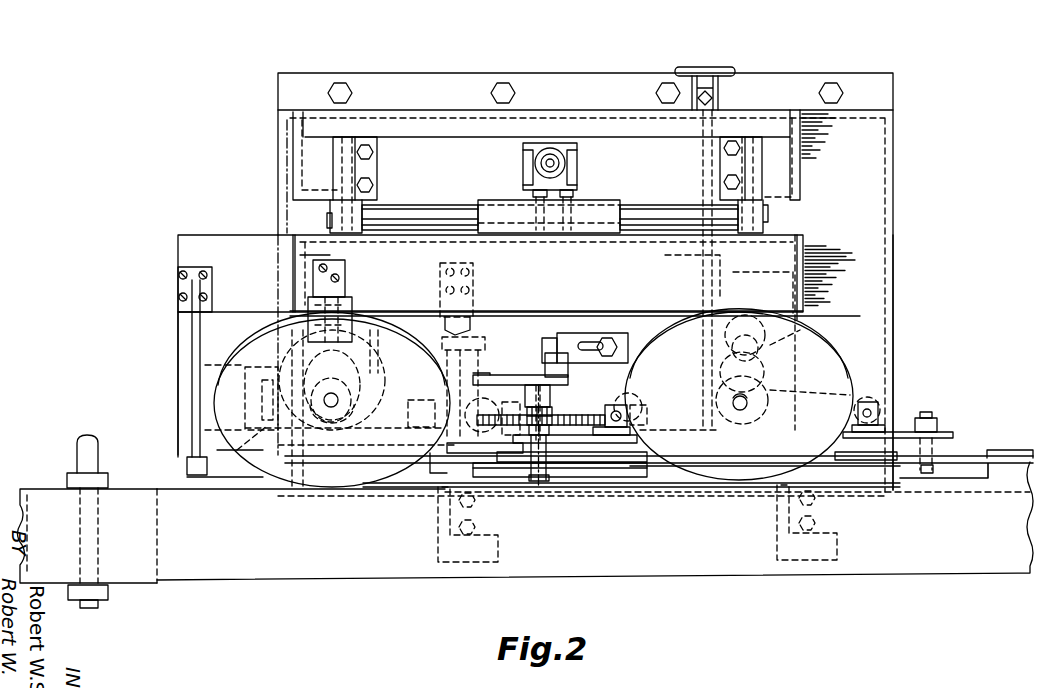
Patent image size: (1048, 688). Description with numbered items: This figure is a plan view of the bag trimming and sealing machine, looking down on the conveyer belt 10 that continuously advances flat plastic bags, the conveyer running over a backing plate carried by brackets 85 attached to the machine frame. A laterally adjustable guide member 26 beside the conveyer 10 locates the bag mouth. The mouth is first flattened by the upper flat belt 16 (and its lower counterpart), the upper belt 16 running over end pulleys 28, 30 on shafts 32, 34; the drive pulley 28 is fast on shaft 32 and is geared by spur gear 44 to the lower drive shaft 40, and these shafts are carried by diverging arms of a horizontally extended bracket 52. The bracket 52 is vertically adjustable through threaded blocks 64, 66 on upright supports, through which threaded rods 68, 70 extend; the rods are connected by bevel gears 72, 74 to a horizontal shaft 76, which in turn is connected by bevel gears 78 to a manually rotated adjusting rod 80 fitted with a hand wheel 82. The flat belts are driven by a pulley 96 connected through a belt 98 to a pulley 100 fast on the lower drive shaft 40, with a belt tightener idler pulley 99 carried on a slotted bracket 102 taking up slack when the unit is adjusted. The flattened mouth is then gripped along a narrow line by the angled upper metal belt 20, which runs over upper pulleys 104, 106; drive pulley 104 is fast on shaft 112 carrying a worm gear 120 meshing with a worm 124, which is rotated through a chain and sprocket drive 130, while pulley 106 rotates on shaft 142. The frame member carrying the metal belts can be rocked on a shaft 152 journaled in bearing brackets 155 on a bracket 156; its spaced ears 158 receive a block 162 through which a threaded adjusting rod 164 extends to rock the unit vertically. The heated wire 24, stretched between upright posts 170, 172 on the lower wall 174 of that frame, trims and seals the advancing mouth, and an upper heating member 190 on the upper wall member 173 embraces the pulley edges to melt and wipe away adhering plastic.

The conveyer belt 10 is at (715, 568).
The upper flat belt 16 is at (950, 463).
The upper metal belt 20 is at (660, 488).
The heated wire 24 is at (232, 478).
The guide member 26 is at (1000, 448).
The end pulley 28 is at (536, 488).
The end pulley 30 is at (897, 470).
The shaft 32 is at (553, 484).
The shaft 34 is at (930, 476).
The shaft 40 is at (552, 397).
The spur gear 44 is at (590, 415).
The bracket 52 is at (948, 430).
The threaded block 64 is at (624, 405).
The threaded block 66 is at (867, 397).
The threaded rod 68 is at (621, 413).
The threaded rod 70 is at (877, 410).
The bevel gear 72 is at (650, 408).
The bevel gear 74 is at (783, 377).
The horizontal shaft 76 is at (768, 395).
The bevel gears 78 is at (705, 410).
The adjusting rod 80 is at (710, 270).
The hand wheel 82 is at (712, 70).
The brackets 85 is at (438, 530).
The pulley 96 is at (435, 380).
The belt 98 is at (507, 376).
The idler pulley 99 is at (558, 368).
The pulley 100 is at (527, 375).
The slotted bracket 102 is at (598, 333).
The upper pulley 104 is at (262, 358).
The upper pulley 106 is at (818, 353).
The shaft 112 is at (340, 398).
The worm gear 120 is at (450, 315).
The worm 124 is at (340, 414).
The chain and sprocket drive 130 is at (157, 521).
The shaft 142 is at (745, 406).
The shaft 152 is at (670, 212).
The bearing brackets 155 is at (348, 165).
The bracket 156 is at (428, 137).
The spaced ears 158 is at (523, 158).
The block 162 is at (556, 150).
The threaded adjusting rod 164 is at (565, 170).
The upright post 170 is at (190, 356).
The upright post 172 is at (470, 312).
The upper wall member 173 is at (297, 283).
The lower wall 174 is at (243, 242).
The upper heating member 190 is at (345, 298).